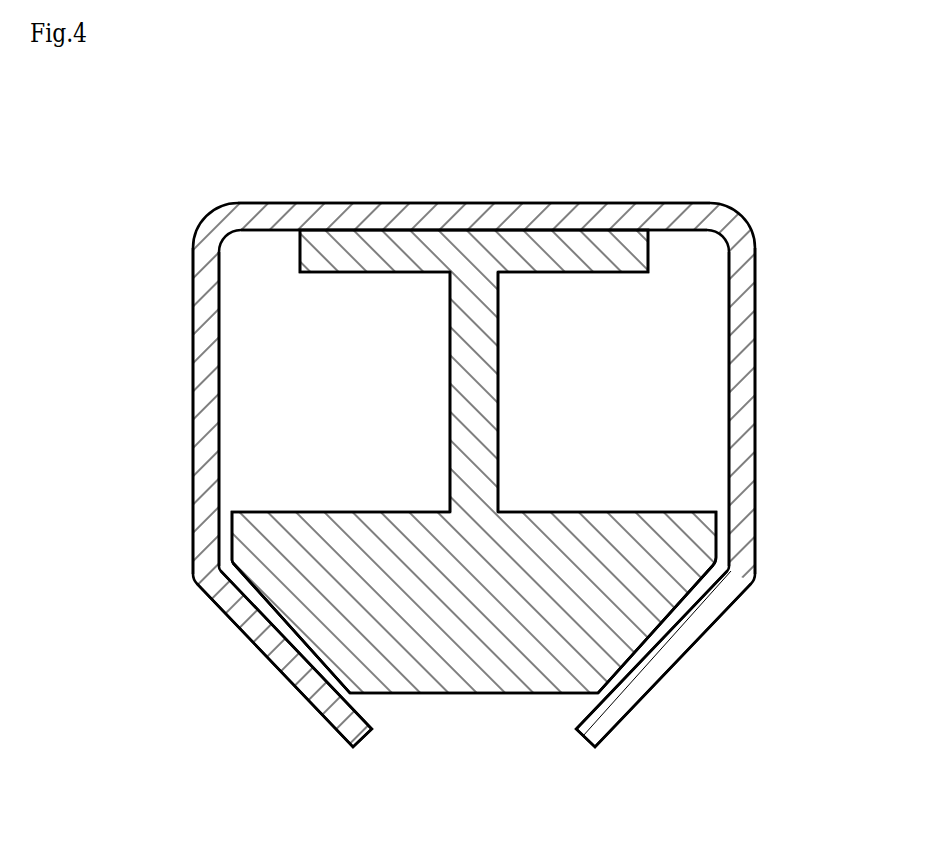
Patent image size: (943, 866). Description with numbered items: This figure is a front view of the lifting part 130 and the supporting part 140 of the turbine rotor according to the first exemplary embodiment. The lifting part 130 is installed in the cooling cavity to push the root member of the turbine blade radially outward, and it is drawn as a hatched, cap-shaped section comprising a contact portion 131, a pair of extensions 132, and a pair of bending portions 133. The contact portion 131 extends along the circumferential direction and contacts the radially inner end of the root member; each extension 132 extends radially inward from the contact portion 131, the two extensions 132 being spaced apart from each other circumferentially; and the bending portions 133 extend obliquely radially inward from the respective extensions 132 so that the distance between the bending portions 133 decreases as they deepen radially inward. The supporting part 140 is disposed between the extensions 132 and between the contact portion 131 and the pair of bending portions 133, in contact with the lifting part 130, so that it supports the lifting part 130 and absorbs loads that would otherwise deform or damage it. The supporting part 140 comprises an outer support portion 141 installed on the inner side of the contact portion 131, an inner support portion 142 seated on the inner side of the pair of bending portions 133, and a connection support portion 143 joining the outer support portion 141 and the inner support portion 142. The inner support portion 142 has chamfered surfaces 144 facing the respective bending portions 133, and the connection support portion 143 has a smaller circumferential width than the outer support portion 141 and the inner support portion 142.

The lifting part 130 is at (154, 411).
The contact portion 131 is at (498, 217).
The extensions 132 is at (207, 333).
The bending portions 133 is at (252, 627).
The supporting part 140 is at (341, 469).
The outer support portion 141 is at (355, 255).
The inner support portion 142 is at (472, 662).
The connection support portion 143 is at (478, 387).
The chamfered surfaces 144 is at (280, 660).